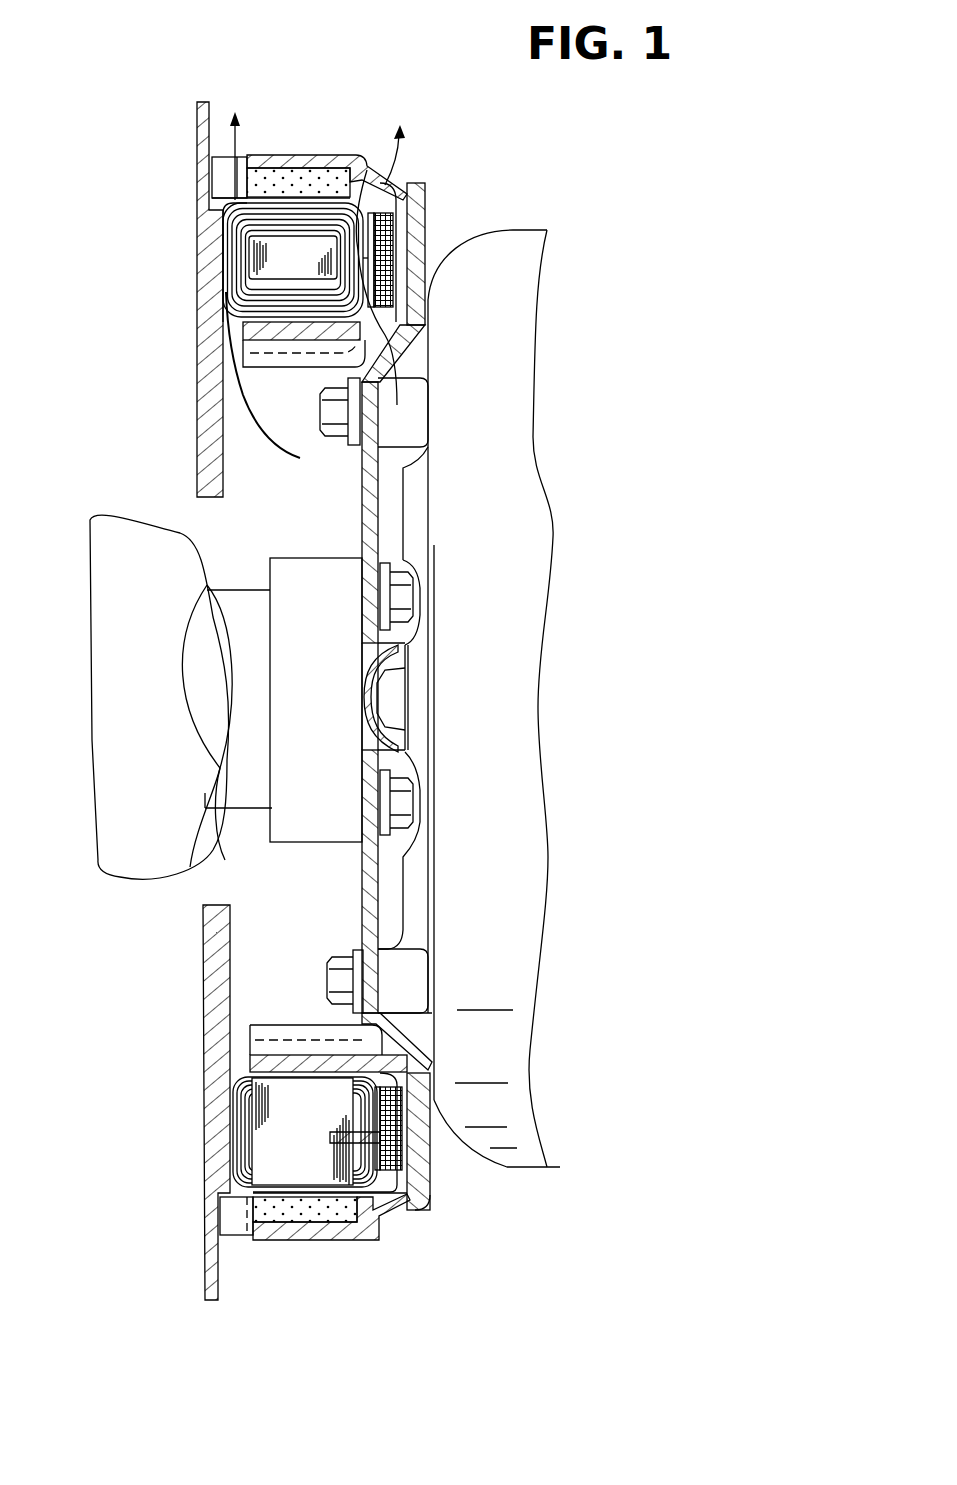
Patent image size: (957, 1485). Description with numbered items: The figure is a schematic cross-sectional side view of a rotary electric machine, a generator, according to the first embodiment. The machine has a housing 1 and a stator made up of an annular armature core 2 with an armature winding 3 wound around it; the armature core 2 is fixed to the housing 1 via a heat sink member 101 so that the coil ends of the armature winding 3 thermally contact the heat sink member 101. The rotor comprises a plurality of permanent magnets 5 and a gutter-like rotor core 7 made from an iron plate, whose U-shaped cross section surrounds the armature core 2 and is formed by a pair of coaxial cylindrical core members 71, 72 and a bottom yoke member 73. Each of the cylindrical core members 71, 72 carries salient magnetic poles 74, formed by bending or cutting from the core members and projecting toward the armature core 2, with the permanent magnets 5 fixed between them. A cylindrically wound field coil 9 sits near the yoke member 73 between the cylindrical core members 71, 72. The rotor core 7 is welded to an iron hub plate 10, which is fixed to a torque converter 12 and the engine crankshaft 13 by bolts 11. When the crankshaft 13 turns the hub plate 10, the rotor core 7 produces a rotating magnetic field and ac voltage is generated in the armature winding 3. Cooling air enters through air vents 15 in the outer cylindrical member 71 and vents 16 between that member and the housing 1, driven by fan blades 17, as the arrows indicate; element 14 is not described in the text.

The housing 1 is at (215, 978).
The annular armature core 2 is at (280, 1135).
The armature winding 3 is at (250, 1168).
The permanent magnets 5 is at (293, 183).
The gutter-like rotor core 7 is at (347, 140).
The field coil 9 is at (357, 1057).
The hub plate 10 is at (370, 830).
The bolts 11 is at (397, 800).
The torque converter 12 is at (493, 957).
The crankshaft 13 is at (250, 783).
The bolt 14 is at (340, 980).
The air vents 15 is at (383, 173).
The vents 16 is at (222, 150).
The fan blades 17 is at (222, 178).
The outer cylindrical core member 71 is at (337, 160).
The inner cylindrical core member 72 is at (245, 347).
The bottom yoke member 73 is at (330, 380).
The salient magnetic poles 74 is at (245, 366).
The heat sink member 101 is at (265, 1115).